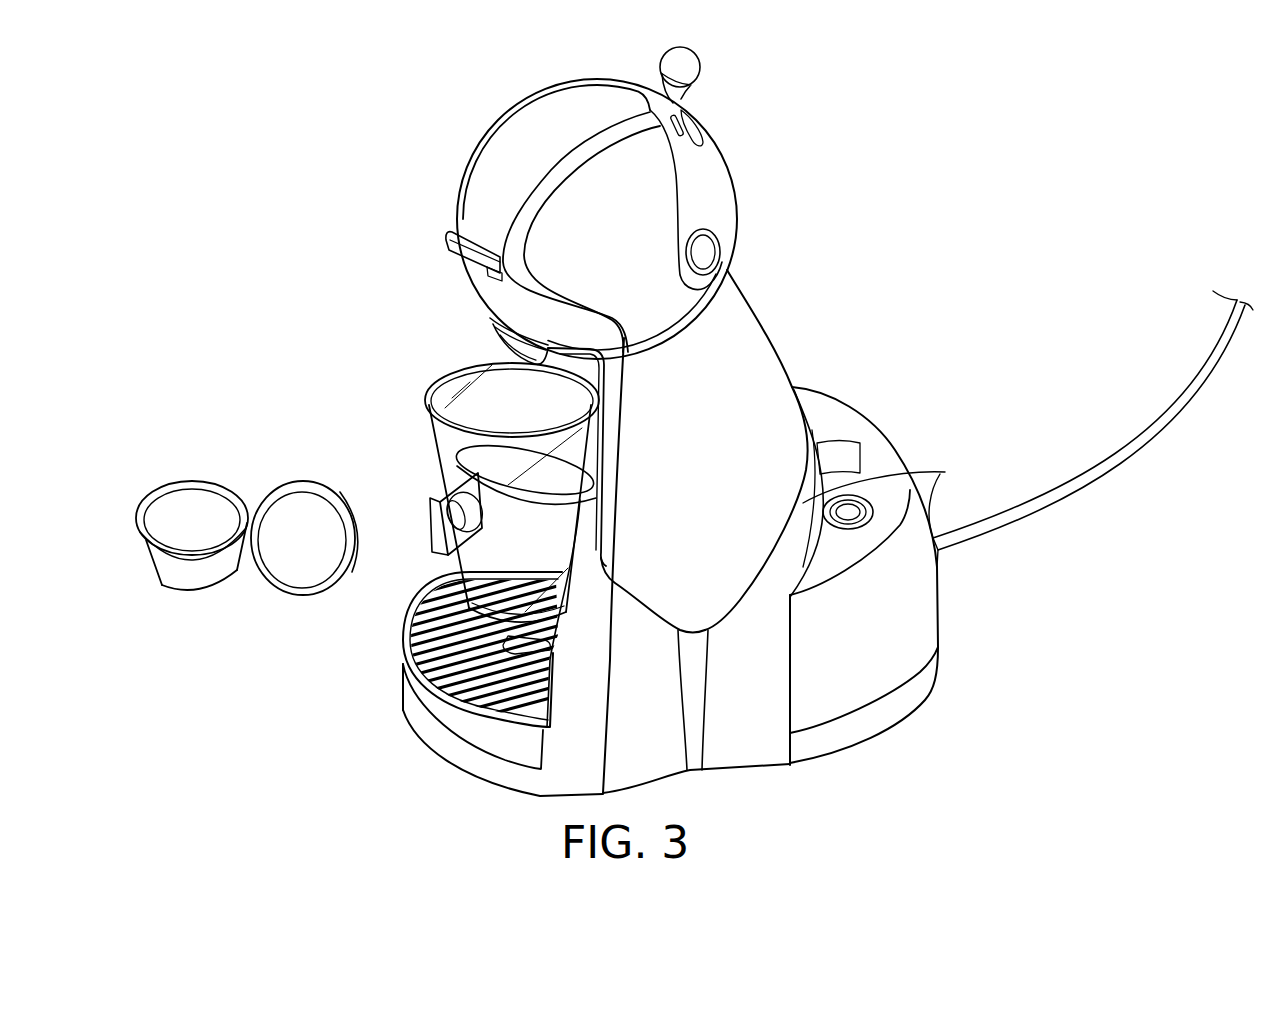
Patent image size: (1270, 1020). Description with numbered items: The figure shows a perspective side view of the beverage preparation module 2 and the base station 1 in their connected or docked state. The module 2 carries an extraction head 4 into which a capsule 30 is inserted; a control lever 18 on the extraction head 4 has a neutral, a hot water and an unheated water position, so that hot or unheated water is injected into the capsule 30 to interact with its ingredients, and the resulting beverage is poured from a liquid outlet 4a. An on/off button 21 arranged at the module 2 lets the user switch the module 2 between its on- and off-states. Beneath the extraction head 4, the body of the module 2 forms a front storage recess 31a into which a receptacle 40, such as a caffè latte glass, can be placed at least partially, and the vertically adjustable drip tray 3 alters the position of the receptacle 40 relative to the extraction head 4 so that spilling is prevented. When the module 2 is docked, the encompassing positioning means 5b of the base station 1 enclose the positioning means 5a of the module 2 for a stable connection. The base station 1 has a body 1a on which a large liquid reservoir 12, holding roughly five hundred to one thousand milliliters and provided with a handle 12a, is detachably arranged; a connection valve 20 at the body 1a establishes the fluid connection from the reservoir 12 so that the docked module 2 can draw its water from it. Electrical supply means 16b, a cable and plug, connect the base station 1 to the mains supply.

The base station 1 is at (900, 729).
The body of the base station 1a is at (760, 760).
The beverage preparation module 2 is at (737, 327).
The drip tray 3 is at (408, 650).
The extraction head 4 is at (653, 187).
The liquid outlet 4a is at (483, 367).
The positioning means 5a is at (608, 490).
The encompassing positioning means 5b is at (803, 503).
The liquid reservoir 12 is at (925, 608).
The handle 12a is at (822, 410).
The electrical supply means 16b is at (1127, 452).
The control lever 18 is at (700, 67).
The connection valve 20 is at (870, 510).
The on/off button 21 is at (705, 252).
The capsule 30 is at (192, 500).
The storage recess 31a is at (488, 333).
The receptacle 40 is at (430, 428).